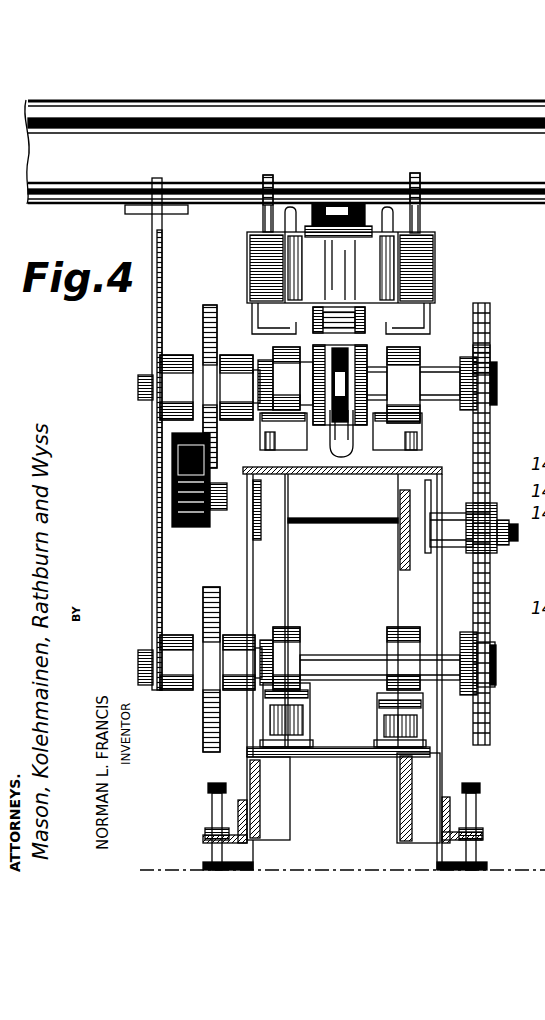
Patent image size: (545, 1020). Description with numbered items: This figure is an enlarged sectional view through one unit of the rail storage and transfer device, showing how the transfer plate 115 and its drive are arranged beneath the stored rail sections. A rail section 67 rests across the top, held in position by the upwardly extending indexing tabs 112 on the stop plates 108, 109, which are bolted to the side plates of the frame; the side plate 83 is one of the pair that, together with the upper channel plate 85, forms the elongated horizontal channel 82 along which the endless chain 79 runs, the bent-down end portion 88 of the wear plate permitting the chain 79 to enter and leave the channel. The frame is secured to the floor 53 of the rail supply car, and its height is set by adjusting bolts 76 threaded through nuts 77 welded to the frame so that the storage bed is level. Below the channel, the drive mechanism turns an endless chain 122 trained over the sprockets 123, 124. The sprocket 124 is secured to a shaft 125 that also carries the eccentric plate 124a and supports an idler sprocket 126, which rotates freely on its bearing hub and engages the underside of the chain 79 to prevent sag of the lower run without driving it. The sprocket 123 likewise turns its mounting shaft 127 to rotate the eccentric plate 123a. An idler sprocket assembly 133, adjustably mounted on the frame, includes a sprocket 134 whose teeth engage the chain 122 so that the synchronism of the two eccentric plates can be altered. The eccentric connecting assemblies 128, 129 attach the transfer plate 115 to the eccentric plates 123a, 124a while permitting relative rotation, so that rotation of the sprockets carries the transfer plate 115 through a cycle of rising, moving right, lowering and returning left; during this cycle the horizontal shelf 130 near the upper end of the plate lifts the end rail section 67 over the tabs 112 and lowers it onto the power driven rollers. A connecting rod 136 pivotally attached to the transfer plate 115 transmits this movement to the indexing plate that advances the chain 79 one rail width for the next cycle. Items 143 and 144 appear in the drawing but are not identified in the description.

The floor 53 is at (345, 868).
The rail section 67 is at (521, 168).
The adjusting bolt 76 is at (213, 800).
The nut 77 is at (210, 846).
The endless chain 79 is at (343, 234).
The horizontal channel 82 is at (416, 331).
The side plate 83 is at (270, 331).
The upper channel plate 85 is at (287, 207).
The end portion 88 is at (357, 236).
The stop plate 108 is at (262, 211).
The stop plate 109 is at (422, 214).
The indexing tab 112 is at (268, 175).
The transfer plate 115 is at (152, 341).
The endless chain 122 is at (490, 445).
The sprocket 123 is at (486, 650).
The eccentric plate 123a is at (204, 722).
The sprocket 124 is at (492, 358).
The eccentric plate 124a is at (213, 305).
The shaft 125 is at (435, 410).
The idler sprocket 126 is at (340, 466).
The mounting shaft 127 is at (345, 657).
The eccentric connecting assembly 128 is at (178, 636).
The eccentric connecting assembly 129 is at (187, 345).
The horizontal shelf 130 is at (150, 208).
The idler sprocket assembly 133 is at (516, 332).
The sprocket 134 is at (476, 508).
The connecting rod 136 is at (172, 450).
The nut 143 is at (527, 557).
The washer 144 is at (521, 540).